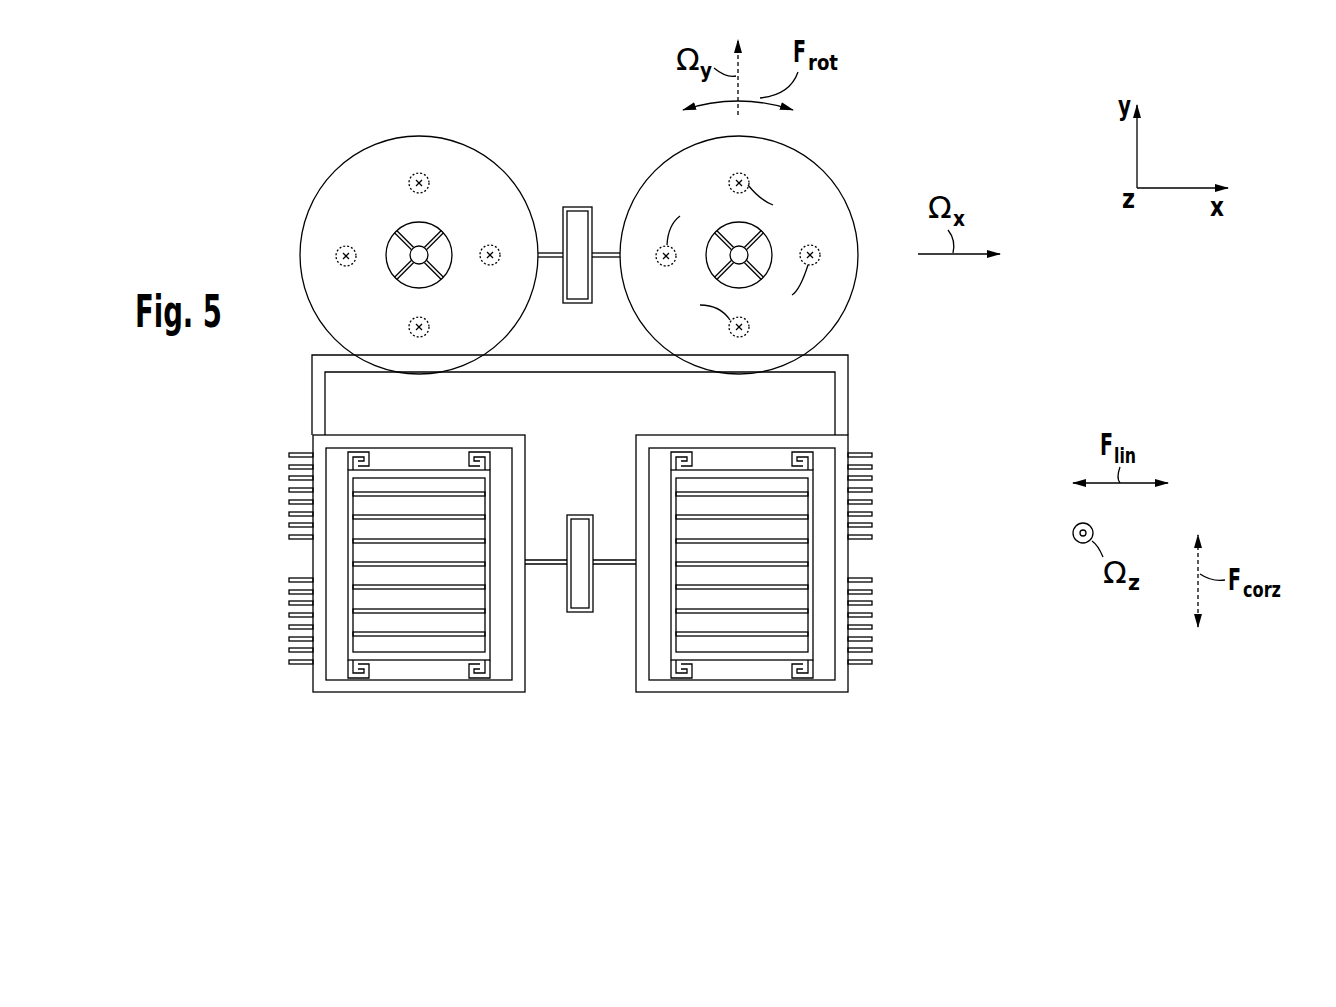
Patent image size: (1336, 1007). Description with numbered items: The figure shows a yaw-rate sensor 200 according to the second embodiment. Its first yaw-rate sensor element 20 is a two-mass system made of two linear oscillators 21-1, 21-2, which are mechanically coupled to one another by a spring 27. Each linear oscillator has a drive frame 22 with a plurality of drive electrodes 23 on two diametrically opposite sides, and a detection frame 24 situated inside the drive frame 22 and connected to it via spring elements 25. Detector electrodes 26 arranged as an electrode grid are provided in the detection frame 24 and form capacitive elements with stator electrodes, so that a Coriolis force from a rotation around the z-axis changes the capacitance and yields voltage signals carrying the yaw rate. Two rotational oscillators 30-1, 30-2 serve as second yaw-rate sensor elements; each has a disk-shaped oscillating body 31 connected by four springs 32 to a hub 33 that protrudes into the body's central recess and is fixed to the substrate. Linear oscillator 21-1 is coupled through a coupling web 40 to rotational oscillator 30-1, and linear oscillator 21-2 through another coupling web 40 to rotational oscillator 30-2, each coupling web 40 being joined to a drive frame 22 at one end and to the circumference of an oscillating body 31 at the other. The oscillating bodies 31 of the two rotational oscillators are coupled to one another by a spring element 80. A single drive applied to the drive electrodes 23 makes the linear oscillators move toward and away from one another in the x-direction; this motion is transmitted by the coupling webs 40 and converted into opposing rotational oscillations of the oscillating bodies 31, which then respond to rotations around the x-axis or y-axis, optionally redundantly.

The first yaw-rate sensor element 20 is at (250, 423).
The linear oscillator 21-1 is at (415, 700).
The linear oscillator 21-2 is at (752, 700).
The drive frame 22 is at (368, 688).
The drive electrodes 23 is at (863, 670).
The detection frame 24 is at (460, 657).
The spring elements 25 is at (673, 458).
The detector electrodes 26 is at (430, 495).
The spring 27 is at (583, 612).
The rotational oscillator 30-1 is at (415, 128).
The rotational oscillator 30-2 is at (848, 155).
The oscillating body 31 is at (357, 192).
The springs 32 is at (415, 262).
The hub 33 is at (419, 260).
The coupling web 40 is at (320, 405).
The spring element 80 is at (578, 207).
The yaw-rate sensor 200 is at (963, 640).